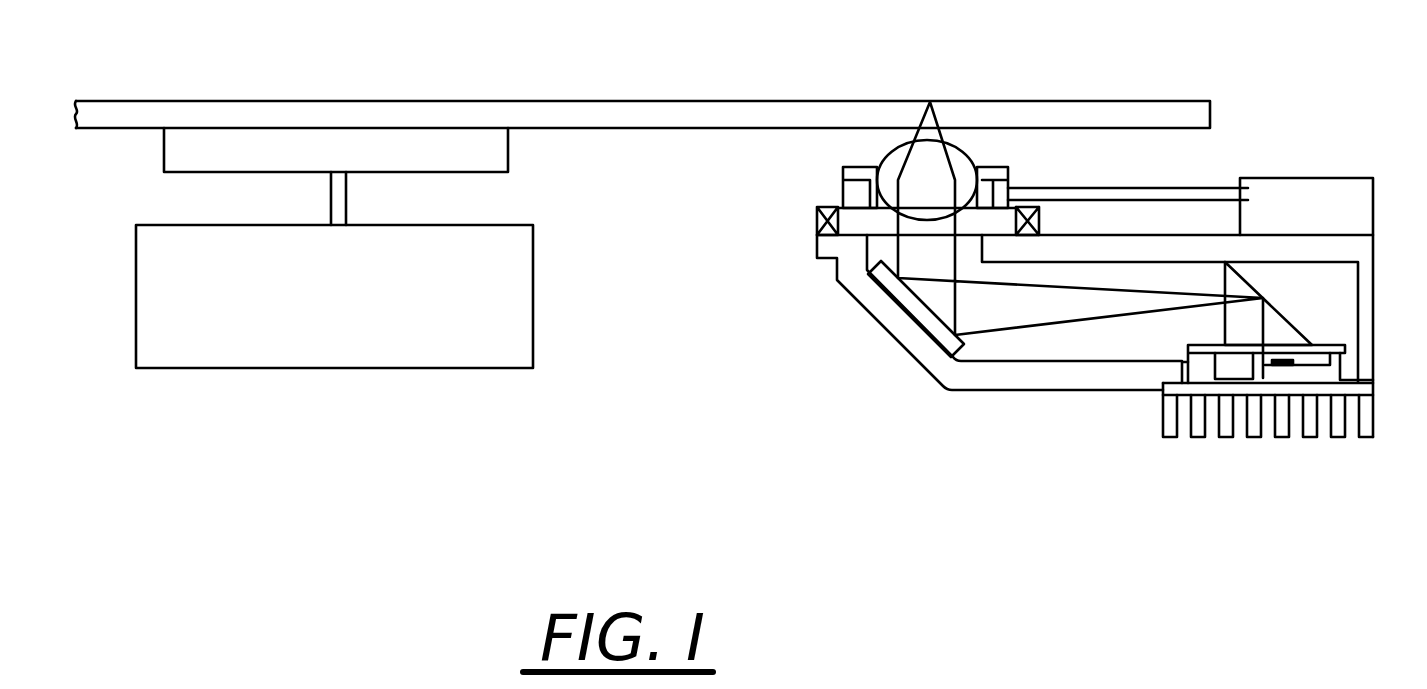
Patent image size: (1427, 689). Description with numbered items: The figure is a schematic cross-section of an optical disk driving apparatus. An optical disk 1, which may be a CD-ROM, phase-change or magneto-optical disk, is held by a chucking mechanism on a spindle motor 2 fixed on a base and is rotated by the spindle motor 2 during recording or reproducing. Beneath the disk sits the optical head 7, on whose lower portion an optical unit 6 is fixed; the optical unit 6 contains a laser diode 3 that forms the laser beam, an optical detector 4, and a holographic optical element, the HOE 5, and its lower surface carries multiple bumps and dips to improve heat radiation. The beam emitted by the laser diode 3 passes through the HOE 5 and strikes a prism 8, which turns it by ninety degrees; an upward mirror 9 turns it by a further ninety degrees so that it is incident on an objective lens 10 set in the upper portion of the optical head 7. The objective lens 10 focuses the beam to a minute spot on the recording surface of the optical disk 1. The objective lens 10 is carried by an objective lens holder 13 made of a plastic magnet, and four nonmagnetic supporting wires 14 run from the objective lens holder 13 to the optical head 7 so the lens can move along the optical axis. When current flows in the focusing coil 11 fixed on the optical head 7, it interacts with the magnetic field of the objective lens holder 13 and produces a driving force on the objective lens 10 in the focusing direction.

The optical disk 1 is at (570, 101).
The spindle motor 2 is at (415, 354).
The laser diode 3 is at (1260, 370).
The optical detector 4 is at (1285, 367).
The HOE (Holographic Optical Element) 5 is at (1322, 345).
The optical unit 6 is at (1198, 445).
The optical head 7 is at (1020, 388).
The prism 8 is at (1287, 320).
The upward mirror 9 is at (921, 320).
The objective lens 10 is at (977, 160).
The focusing coil 11 is at (815, 217).
The objective lens holder 13 is at (847, 190).
The supporting wires 14 is at (1188, 182).